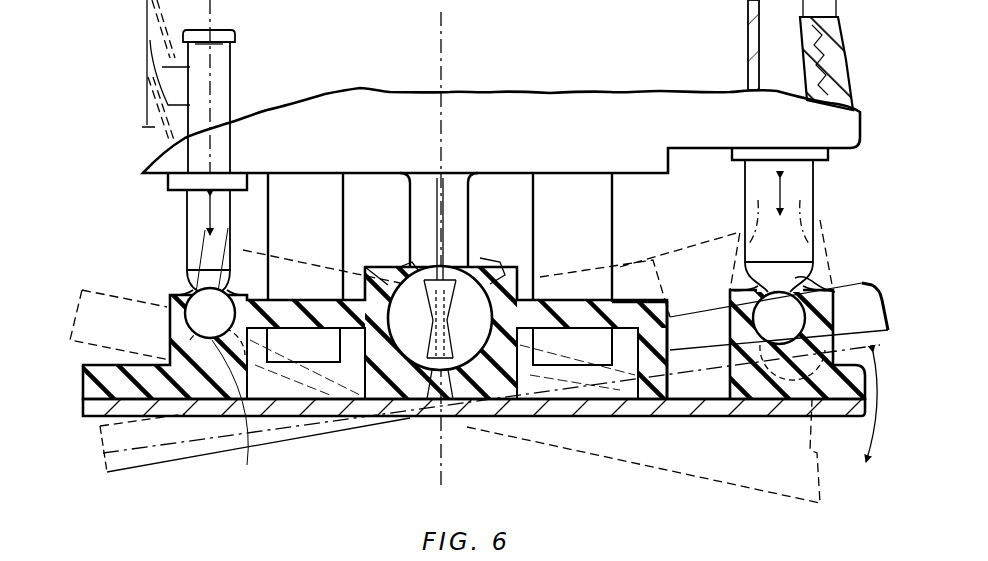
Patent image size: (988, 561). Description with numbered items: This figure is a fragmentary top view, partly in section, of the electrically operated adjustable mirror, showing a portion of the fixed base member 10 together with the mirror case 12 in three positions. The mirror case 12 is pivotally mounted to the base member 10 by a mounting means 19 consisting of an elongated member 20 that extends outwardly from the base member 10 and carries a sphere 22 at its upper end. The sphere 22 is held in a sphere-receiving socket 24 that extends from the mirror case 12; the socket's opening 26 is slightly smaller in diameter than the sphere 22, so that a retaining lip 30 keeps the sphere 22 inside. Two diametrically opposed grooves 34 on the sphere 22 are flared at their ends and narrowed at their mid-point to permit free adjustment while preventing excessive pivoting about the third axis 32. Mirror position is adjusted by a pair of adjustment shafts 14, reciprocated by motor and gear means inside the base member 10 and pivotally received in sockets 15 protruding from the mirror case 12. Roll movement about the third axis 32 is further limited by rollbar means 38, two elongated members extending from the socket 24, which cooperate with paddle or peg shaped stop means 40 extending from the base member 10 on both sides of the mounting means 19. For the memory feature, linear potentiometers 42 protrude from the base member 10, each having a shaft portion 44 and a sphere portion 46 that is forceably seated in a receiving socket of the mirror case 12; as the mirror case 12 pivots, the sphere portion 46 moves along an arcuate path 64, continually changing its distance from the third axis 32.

The base member 10 is at (613, 88).
The mirror case 12 is at (862, 397).
The adjustment shafts 14 is at (798, 183).
The sockets 15 is at (795, 300).
The mounting means 19 is at (413, 213).
The elongated member 20 is at (466, 201).
The sphere 22 is at (464, 337).
The sphere-receiving socket 24 is at (440, 405).
The opening 26 is at (489, 262).
The retaining lip 30 is at (402, 262).
The third axis 32 is at (441, 130).
The grooves 34 is at (448, 298).
The rollbar means 38 is at (590, 306).
The stop means 40 is at (311, 233).
The linear potentiometers 42 is at (178, 203).
The shaft portion 44 is at (189, 219).
The sphere portion 46 is at (203, 312).
The arcuate path 64 is at (243, 430).